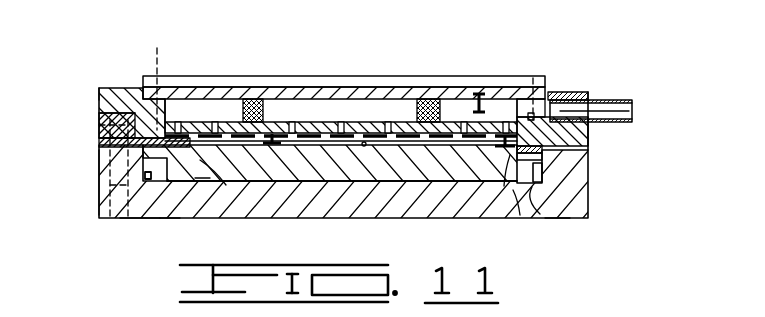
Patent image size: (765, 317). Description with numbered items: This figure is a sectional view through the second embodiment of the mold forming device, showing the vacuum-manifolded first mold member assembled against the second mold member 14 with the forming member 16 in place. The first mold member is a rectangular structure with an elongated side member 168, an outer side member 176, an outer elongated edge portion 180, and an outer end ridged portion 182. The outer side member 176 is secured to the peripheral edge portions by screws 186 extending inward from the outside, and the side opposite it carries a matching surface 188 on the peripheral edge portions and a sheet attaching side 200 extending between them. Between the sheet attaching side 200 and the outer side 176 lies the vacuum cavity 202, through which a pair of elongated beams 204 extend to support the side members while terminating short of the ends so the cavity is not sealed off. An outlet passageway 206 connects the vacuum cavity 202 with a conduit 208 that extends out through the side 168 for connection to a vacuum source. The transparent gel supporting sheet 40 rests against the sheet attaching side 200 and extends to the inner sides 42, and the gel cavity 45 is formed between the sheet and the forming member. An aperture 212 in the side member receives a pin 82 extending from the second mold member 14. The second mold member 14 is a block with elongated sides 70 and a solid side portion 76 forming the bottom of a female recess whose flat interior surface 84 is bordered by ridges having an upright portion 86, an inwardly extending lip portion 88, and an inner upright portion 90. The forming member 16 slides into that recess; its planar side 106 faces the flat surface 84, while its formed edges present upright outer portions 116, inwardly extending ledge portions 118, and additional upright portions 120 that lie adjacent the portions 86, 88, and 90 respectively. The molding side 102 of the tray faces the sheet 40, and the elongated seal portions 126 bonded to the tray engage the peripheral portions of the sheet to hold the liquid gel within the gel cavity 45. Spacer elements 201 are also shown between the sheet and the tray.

The second mold member 14 is at (88, 211).
The forming member 16 is at (422, 190).
The transparent gel supporting sheet 40 is at (210, 143).
The inner sides 42 is at (589, 135).
The gel cavity 45 is at (281, 135).
The elongated sides 70 is at (97, 188).
The solid side portion 76 is at (166, 220).
The lug 82 is at (113, 171).
The flat interior surface 84 is at (142, 218).
The upright portion 86 is at (143, 155).
The inwardly extending lip portion 88 is at (100, 129).
The inner upright portion 90 is at (98, 113).
The molding side 102 is at (363, 146).
The planar side 106 is at (196, 180).
The upright outer portions 116 is at (557, 218).
The inwardly extending ledge portions 118 is at (533, 188).
The additional upright portions 120 is at (513, 192).
The elongated seal portions 126 is at (195, 163).
The elongated side member 168 is at (589, 93).
The outer side member 176 is at (197, 97).
The outer elongated edge portion 180 is at (110, 88).
The outer end ridged portion 182 is at (234, 84).
The screws 186 is at (157, 48).
The matching surface 188 is at (540, 160).
The sheet attaching side 200 is at (452, 127).
The spacer posts 201 is at (342, 133).
The vacuum cavity 202 is at (483, 100).
The elongated beams 204 is at (256, 101).
The outlet passageway 206 is at (550, 101).
The conduit 208 is at (633, 110).
The aperture 212 is at (97, 91).